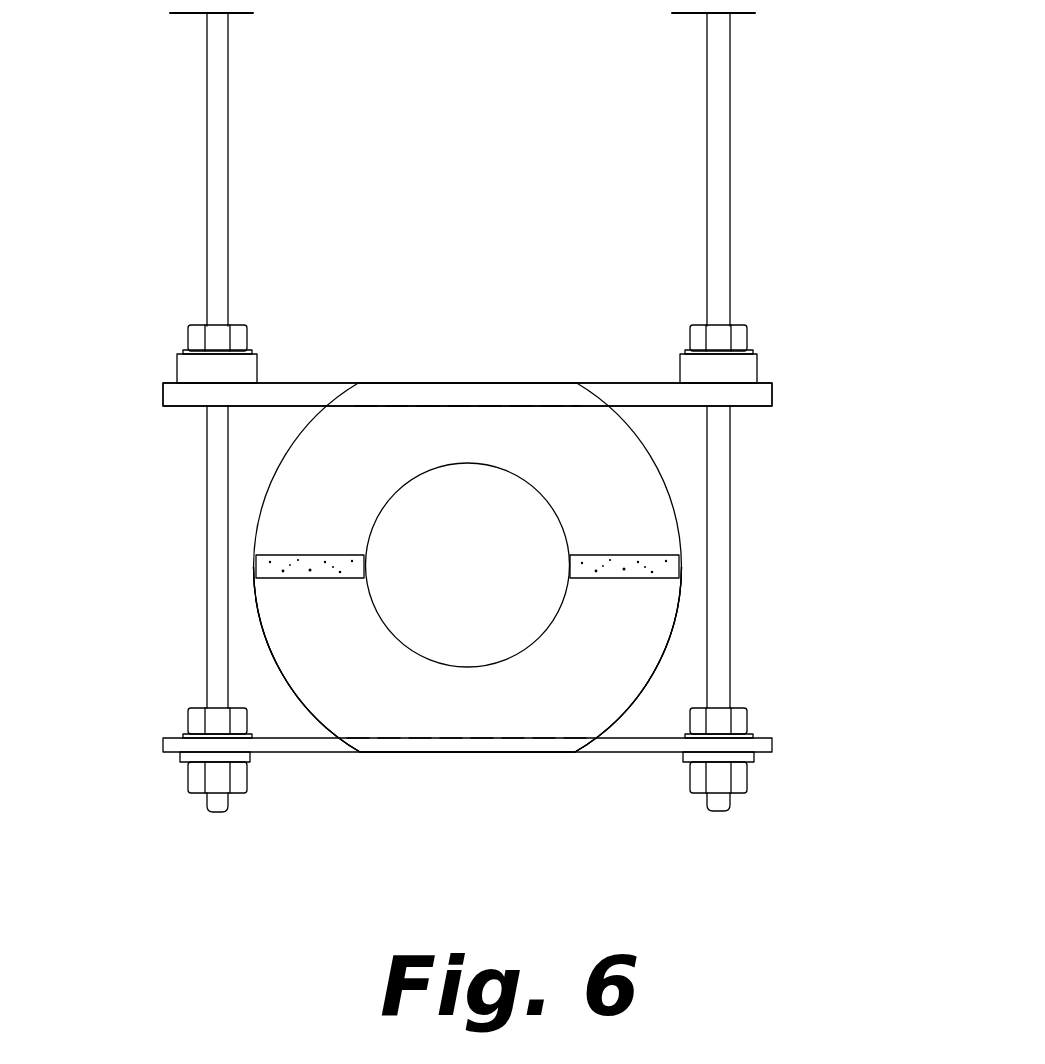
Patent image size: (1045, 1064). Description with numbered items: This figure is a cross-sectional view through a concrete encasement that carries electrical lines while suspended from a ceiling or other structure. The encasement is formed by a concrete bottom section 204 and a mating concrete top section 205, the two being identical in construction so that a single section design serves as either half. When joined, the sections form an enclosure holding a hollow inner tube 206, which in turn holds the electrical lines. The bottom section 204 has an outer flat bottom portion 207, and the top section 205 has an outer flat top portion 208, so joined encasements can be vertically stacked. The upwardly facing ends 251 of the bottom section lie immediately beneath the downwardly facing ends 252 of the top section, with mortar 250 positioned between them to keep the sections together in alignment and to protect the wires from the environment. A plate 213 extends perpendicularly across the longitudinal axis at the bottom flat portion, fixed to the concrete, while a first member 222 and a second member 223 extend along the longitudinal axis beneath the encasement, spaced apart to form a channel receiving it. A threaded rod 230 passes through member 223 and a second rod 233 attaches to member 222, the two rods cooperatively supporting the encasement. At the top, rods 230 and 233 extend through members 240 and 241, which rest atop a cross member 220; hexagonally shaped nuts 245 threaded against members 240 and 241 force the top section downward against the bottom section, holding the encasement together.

The concrete bottom section 204 is at (590, 690).
The concrete top section 205 is at (305, 477).
The inner tube 206 is at (447, 383).
The outer flat bottom portion 207 is at (383, 750).
The outer flat top portion 208 is at (548, 402).
The plate 213 is at (293, 753).
The cross member 220 is at (277, 383).
The first member 222 is at (757, 755).
The second member 223 is at (202, 793).
The threaded rod 230 is at (207, 140).
The second rod 233 is at (707, 120).
The member 240 is at (178, 367).
The member 241 is at (757, 366).
The hexagonally shaped nut 245 is at (745, 326).
The mortar 250 is at (258, 548).
The upwardly facing ends 251 is at (338, 578).
The downwardly facing ends 252 is at (318, 555).